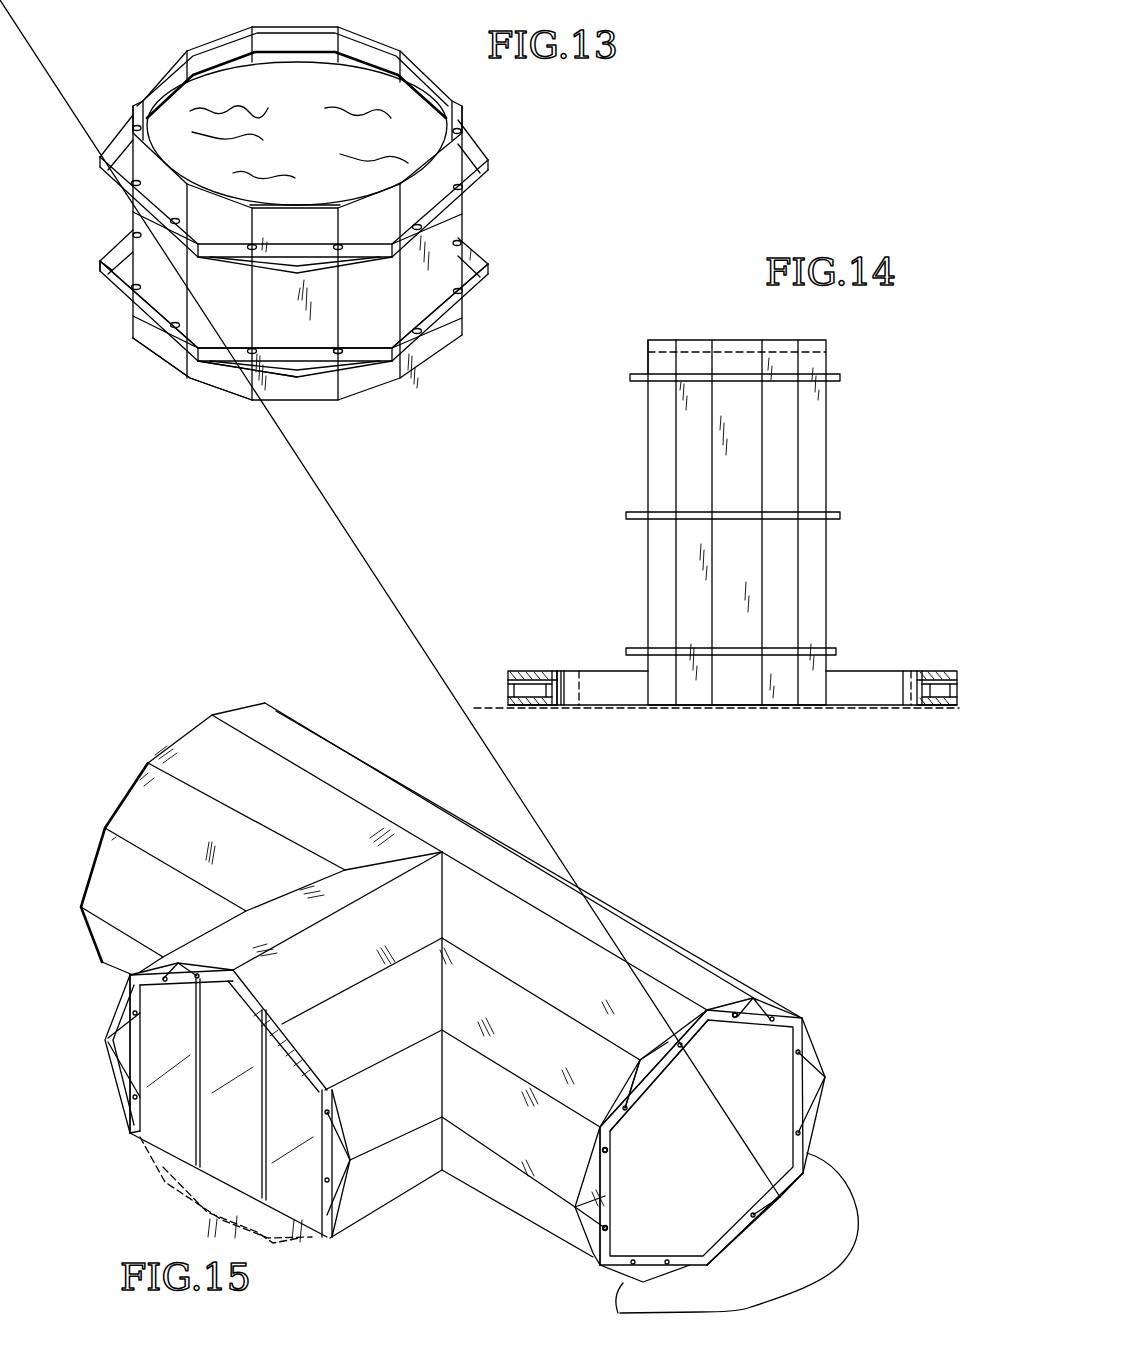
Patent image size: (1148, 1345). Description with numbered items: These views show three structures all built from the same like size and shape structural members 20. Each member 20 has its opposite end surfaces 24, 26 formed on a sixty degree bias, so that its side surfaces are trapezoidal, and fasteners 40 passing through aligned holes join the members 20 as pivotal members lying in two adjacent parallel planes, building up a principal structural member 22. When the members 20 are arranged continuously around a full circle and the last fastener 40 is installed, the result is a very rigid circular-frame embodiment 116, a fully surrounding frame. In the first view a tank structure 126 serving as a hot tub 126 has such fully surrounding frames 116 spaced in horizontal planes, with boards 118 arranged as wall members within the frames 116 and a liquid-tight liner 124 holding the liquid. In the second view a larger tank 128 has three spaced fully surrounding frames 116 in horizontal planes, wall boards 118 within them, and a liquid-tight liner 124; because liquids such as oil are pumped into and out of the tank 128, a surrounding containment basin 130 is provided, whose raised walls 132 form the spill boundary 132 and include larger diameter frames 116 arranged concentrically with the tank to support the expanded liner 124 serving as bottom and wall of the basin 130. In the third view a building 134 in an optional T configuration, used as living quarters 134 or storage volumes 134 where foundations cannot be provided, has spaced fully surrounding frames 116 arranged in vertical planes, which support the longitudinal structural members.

In FIG. 13, the like size and shape structural member 20 is at (378, 364).
In FIG. 15, the like size and shape structural member 20 is at (128, 1140).
In FIG. 13, the principal structural member 22 is at (218, 366).
In FIG. 15, the principal structural member 22 is at (678, 1025).
In FIG. 13, the end surface 24 is at (112, 270).
In FIG. 15, the end surface 24 is at (600, 1136).
In FIG. 13, the end surface 26 is at (110, 262).
In FIG. 15, the end surface 26 is at (600, 1120).
In FIG. 13, the fastener 40 is at (338, 362).
In FIG. 15, the fastener 40 is at (735, 1019).
In FIG. 13, the circular-frame embodiment 116 is at (490, 175).
In FIG. 14, the circular-frame embodiment 116 is at (630, 507).
In FIG. 15, the circular-frame embodiment 116 is at (125, 1116).
In FIG. 13, the boards 118 is at (428, 81).
In FIG. 14, the boards 118 is at (703, 340).
In FIG. 13, the liquid-tight liner 124 is at (373, 64).
In FIG. 14, the liquid-tight liner 124 is at (785, 350).
In FIG. 13, the tank structure 126 is at (165, 369).
In FIG. 14, the larger tank 128 is at (647, 425).
In FIG. 14, the containment basin 130 is at (608, 700).
In FIG. 14, the raised walls 132 is at (926, 674).
In FIG. 15, the building 134 is at (696, 951).